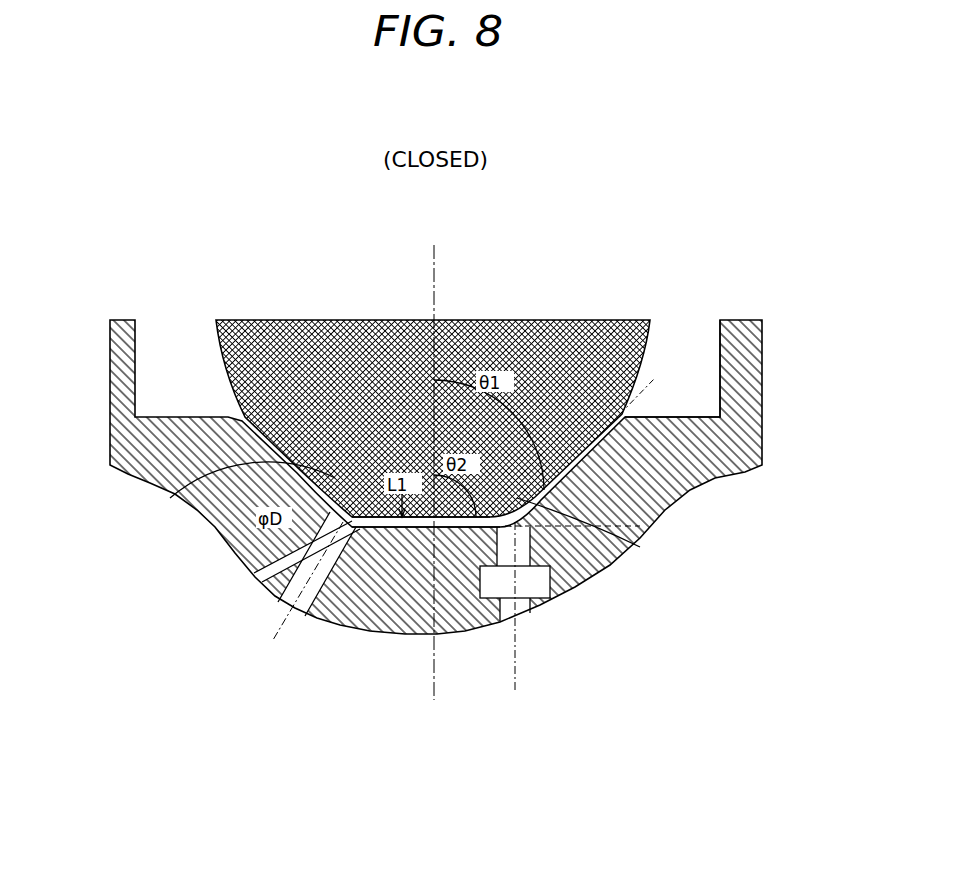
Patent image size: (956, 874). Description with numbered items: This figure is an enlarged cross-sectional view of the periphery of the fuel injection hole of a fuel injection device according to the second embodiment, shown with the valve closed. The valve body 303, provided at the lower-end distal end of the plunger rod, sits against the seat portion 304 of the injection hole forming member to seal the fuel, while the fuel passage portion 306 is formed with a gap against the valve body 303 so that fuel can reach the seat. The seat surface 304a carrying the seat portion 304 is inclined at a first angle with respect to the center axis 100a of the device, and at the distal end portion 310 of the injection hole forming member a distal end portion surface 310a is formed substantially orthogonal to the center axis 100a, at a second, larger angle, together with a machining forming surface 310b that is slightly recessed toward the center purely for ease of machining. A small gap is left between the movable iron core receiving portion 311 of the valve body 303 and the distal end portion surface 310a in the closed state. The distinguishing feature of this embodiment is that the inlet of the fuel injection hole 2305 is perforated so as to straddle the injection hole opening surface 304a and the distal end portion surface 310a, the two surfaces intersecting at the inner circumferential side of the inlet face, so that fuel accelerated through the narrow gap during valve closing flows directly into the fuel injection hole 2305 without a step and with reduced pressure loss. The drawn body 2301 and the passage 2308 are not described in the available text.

The center axis 100a is at (437, 250).
The movable iron core receiving portion 311 is at (383, 512).
The valve body 303 is at (477, 320).
The fuel passage portion 306 is at (678, 342).
The housing body 2301 is at (745, 352).
The seat portion 304 is at (170, 498).
The seat surface 304a is at (640, 547).
The fuel injection hole 2305 is at (273, 582).
The communication passage 2308 is at (357, 528).
The distal end portion 310 is at (448, 528).
The distal end portion surface 310a is at (495, 530).
The machining forming surface 310b is at (417, 533).